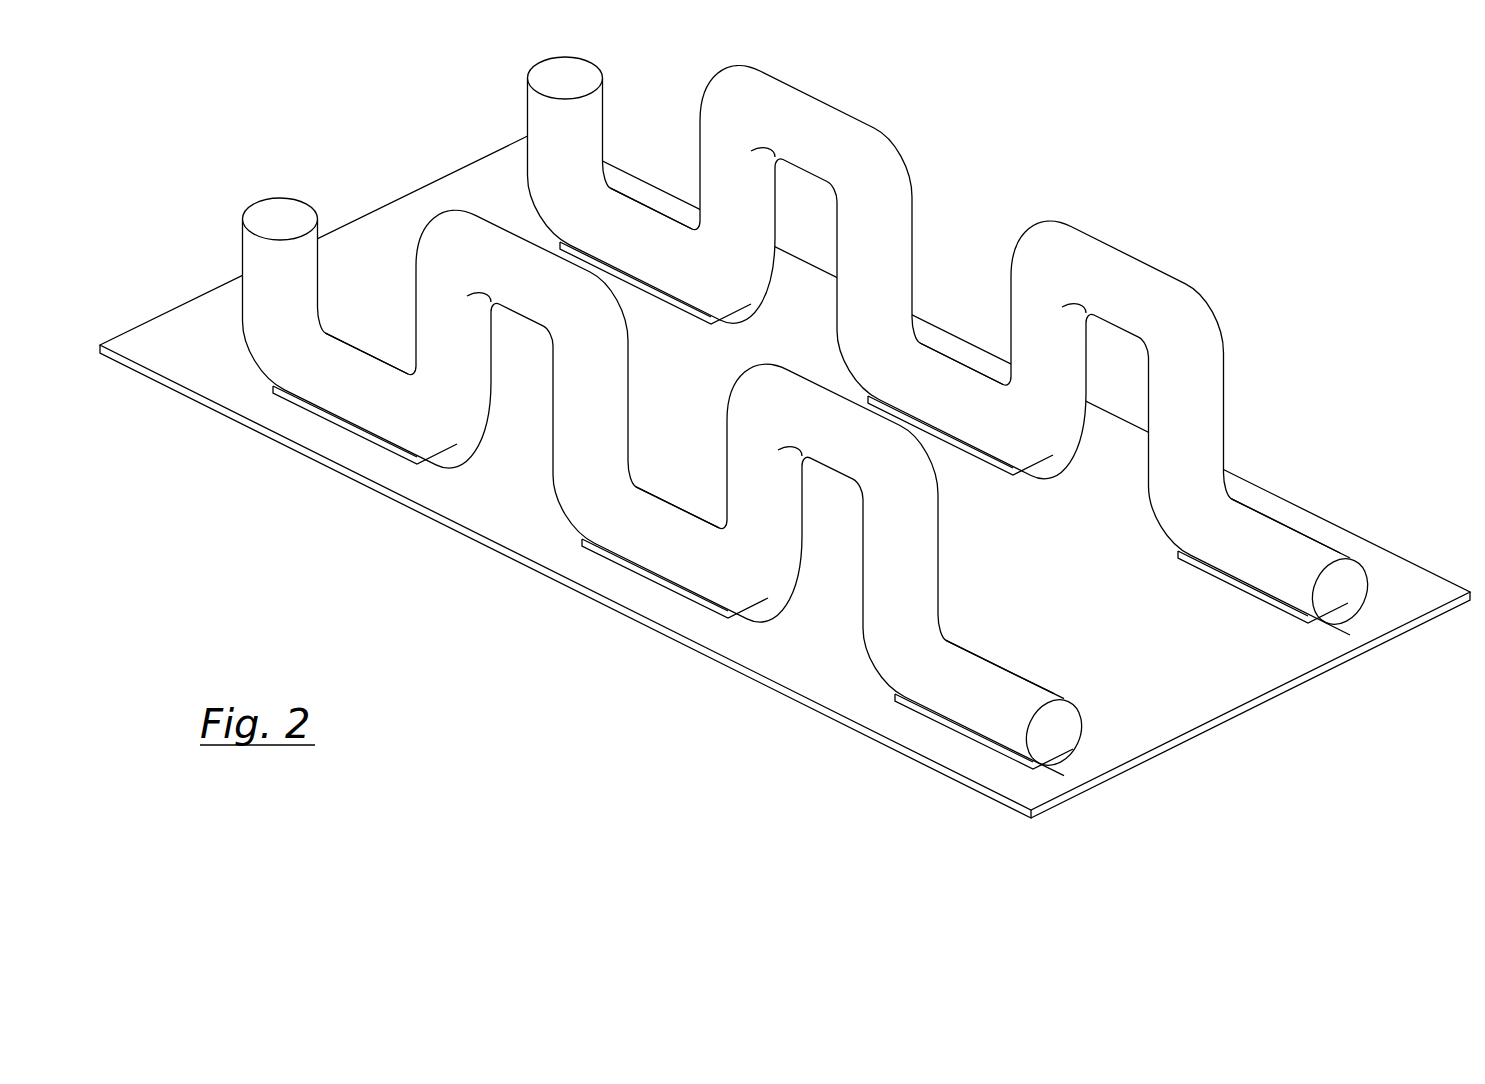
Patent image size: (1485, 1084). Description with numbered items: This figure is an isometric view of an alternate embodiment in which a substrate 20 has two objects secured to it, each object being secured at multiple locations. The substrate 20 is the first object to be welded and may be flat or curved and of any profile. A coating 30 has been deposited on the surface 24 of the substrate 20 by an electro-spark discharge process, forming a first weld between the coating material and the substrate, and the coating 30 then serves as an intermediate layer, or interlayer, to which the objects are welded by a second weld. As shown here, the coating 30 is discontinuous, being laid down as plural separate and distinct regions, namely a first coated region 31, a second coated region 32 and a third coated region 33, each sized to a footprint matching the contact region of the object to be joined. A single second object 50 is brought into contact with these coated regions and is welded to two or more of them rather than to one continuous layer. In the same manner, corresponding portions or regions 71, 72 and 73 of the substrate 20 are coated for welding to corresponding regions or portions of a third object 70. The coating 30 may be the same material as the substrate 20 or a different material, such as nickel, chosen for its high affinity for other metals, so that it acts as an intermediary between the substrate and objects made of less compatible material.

The substrate 20 is at (1190, 690).
The surface 24 is at (1037, 760).
The coating 30 is at (560, 243).
The first coated region 31 is at (953, 720).
The second coated region 32 is at (692, 593).
The third coated region 33 is at (350, 423).
The second object 50 is at (258, 255).
The third object 70 is at (1110, 270).
The portion of substrate 71 is at (1300, 613).
The portion of substrate 72 is at (913, 413).
The portion of substrate 73 is at (603, 262).